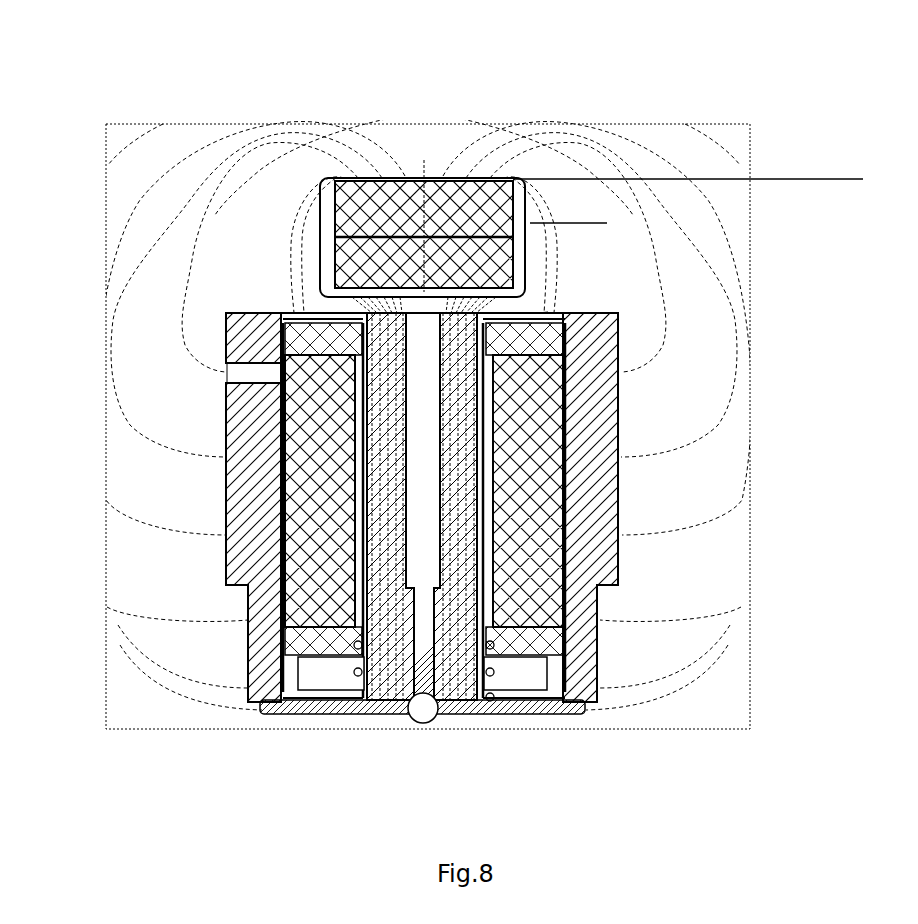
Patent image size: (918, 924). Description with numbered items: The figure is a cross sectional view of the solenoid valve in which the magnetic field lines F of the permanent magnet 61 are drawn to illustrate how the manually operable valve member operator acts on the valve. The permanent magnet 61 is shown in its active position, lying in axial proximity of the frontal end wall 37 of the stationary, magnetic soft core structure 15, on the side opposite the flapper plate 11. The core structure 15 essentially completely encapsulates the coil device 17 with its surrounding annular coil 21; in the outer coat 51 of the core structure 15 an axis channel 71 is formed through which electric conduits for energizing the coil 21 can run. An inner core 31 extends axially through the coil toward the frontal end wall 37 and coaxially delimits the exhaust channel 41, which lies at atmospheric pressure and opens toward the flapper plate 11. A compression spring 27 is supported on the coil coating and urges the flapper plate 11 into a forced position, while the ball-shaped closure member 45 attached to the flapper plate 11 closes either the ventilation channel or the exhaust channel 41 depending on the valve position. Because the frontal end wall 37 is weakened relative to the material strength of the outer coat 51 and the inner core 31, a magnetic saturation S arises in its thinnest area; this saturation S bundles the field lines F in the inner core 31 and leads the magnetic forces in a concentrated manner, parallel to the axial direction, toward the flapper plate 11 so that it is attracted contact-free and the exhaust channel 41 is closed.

The flapper plate 11 is at (377, 704).
The core structure 15 is at (232, 310).
The coil device 17 is at (277, 346).
The coil 21 is at (380, 512).
The compression spring 27 is at (314, 705).
The inner core 31 is at (365, 612).
The frontal end wall 37 is at (292, 312).
The exhaust channel 41 is at (440, 370).
The closure member 45 is at (424, 714).
The outer coat 51 is at (592, 480).
The permanent magnet 61 is at (398, 185).
The axis channel 71 is at (240, 402).
The field lines F is at (622, 148).
The magnetic saturation S is at (548, 312).